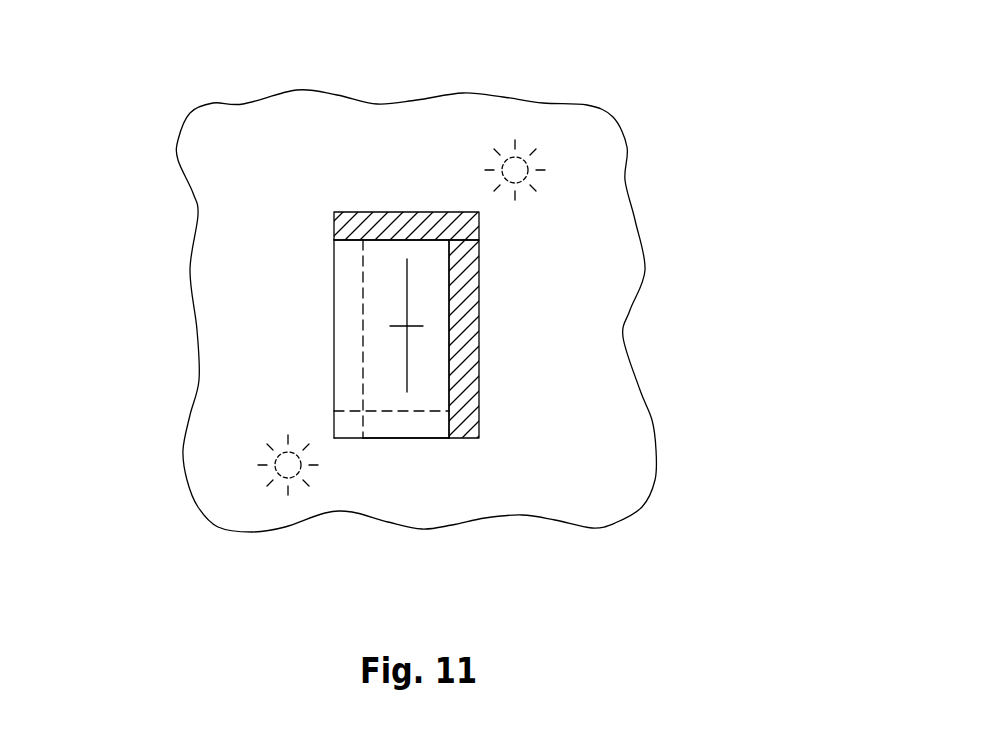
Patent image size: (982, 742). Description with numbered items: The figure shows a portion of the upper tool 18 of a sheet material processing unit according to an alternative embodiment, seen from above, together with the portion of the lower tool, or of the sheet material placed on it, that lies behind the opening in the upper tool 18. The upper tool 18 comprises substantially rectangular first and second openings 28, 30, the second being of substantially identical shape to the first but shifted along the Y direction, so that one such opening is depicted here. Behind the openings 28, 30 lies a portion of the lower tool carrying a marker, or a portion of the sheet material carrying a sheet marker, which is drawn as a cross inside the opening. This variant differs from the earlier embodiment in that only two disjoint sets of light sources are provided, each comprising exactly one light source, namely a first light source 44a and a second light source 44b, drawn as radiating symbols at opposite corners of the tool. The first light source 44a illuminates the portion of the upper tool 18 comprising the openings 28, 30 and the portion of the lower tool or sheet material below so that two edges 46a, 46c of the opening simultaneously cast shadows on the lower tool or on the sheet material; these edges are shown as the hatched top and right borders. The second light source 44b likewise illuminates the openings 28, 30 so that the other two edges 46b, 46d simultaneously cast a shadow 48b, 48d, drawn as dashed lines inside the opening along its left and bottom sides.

The upper tool 18 is at (605, 473).
The edge 46c is at (383, 211).
The edge 46a is at (479, 330).
The edge 46b is at (334, 293).
The edge 46d is at (380, 438).
The shadow 48b is at (351, 350).
The shadow 48d is at (405, 422).
The corner region / contact 28, 30 is at (434, 429).
The first light source 44a is at (527, 128).
The second light source 44b is at (250, 494).